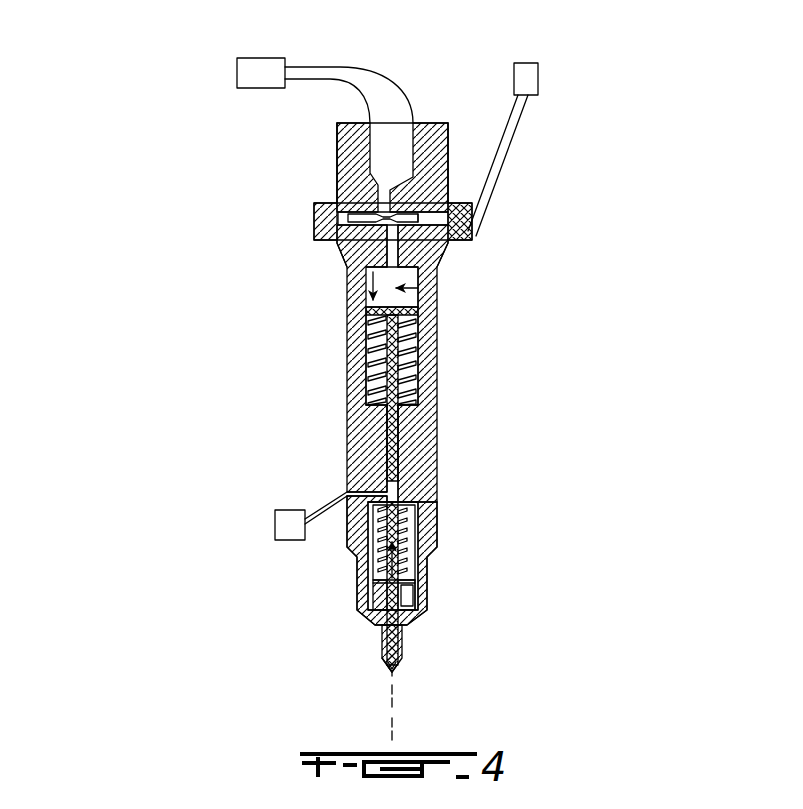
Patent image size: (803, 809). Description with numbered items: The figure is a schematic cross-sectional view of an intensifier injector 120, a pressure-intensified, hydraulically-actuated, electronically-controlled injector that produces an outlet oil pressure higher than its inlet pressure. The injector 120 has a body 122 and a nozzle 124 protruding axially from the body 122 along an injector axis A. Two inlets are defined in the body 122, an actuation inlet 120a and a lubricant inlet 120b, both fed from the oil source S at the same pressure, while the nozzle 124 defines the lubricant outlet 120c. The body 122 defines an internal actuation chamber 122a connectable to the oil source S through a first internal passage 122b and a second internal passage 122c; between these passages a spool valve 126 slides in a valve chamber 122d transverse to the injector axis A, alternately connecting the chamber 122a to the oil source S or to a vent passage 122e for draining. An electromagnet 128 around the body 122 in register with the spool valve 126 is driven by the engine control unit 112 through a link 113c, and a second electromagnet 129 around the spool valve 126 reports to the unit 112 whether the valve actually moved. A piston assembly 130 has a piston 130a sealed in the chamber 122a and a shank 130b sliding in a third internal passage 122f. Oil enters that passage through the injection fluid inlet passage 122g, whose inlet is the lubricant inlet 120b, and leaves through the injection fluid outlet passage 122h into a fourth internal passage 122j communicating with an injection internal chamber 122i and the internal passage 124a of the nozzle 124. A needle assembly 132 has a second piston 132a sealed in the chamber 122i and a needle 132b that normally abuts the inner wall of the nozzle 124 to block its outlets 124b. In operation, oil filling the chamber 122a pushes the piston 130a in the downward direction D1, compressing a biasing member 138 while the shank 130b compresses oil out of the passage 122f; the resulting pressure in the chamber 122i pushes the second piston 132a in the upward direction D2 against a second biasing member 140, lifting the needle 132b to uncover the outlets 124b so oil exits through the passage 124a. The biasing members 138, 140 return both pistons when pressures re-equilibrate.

The injector 120 is at (108, 200).
The actuation inlet 120a is at (386, 108).
The lubricant inlet 120b is at (338, 486).
The lubricant outlet 120c is at (392, 665).
The engine control unit 112 is at (538, 80).
The link 113c is at (510, 147).
The body 122 is at (437, 428).
The internal actuation chamber 122a is at (413, 302).
The first internal passage 122b is at (345, 143).
The second internal passage 122c is at (345, 276).
The valve chamber 122d is at (433, 207).
The vent passage 122e is at (447, 129).
The third internal passage 122f is at (400, 470).
The injection fluid inlet passage 122g is at (350, 546).
The injection fluid outlet passage 122h is at (418, 512).
The injection internal chamber 122i is at (373, 592).
The fourth internal passage 122j is at (427, 612).
The nozzle 124 is at (402, 645).
The internal passage 124a is at (400, 665).
The outlets 124b is at (385, 667).
The spool valve 126 is at (345, 257).
The electromagnet 128 is at (314, 210).
The second electromagnet 129 is at (314, 233).
The piston assembly 130 is at (414, 307).
The piston 130a is at (366, 312).
The shank 130b is at (408, 417).
The needle assembly 132 is at (410, 594).
The second piston 132a is at (412, 590).
The needle 132b is at (383, 650).
The biasing member 138 is at (372, 366).
The second biasing member 140 is at (418, 532).
The oil source S is at (237, 74).
The downward direction D1 is at (352, 288).
The upward direction D2 is at (418, 563).
The injector axis A is at (394, 712).